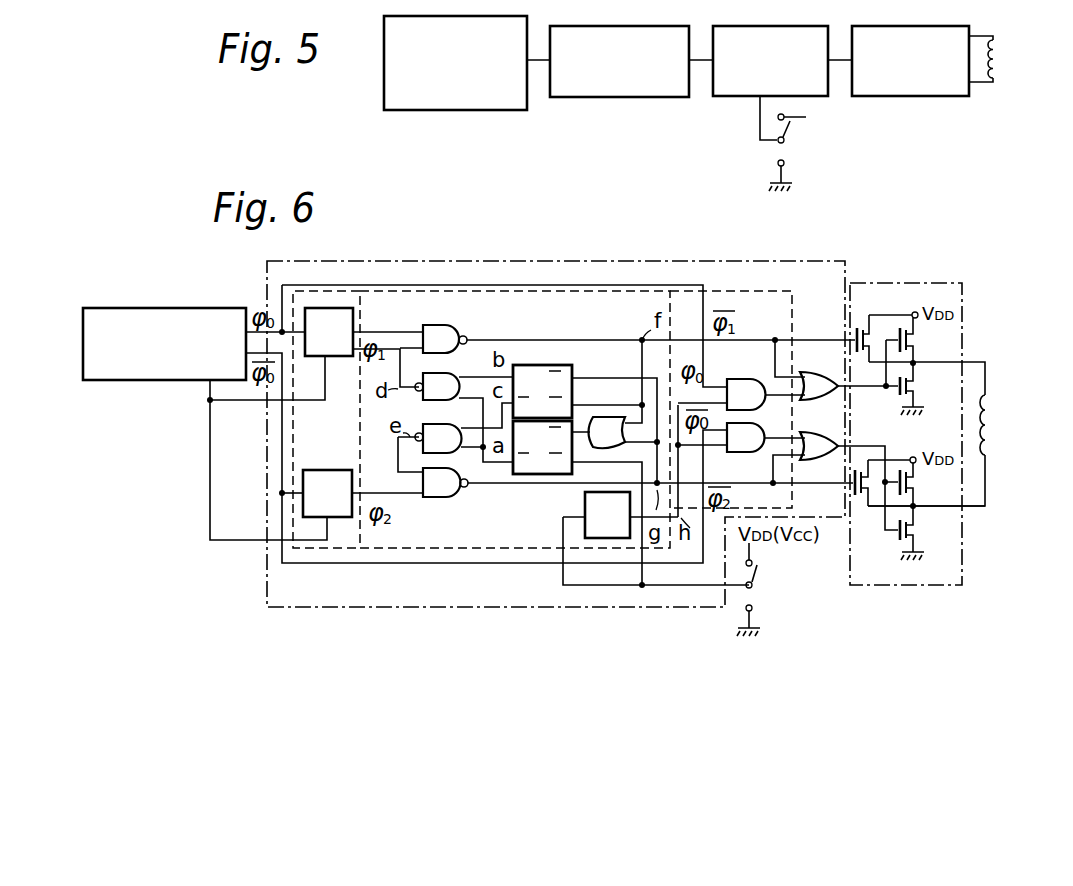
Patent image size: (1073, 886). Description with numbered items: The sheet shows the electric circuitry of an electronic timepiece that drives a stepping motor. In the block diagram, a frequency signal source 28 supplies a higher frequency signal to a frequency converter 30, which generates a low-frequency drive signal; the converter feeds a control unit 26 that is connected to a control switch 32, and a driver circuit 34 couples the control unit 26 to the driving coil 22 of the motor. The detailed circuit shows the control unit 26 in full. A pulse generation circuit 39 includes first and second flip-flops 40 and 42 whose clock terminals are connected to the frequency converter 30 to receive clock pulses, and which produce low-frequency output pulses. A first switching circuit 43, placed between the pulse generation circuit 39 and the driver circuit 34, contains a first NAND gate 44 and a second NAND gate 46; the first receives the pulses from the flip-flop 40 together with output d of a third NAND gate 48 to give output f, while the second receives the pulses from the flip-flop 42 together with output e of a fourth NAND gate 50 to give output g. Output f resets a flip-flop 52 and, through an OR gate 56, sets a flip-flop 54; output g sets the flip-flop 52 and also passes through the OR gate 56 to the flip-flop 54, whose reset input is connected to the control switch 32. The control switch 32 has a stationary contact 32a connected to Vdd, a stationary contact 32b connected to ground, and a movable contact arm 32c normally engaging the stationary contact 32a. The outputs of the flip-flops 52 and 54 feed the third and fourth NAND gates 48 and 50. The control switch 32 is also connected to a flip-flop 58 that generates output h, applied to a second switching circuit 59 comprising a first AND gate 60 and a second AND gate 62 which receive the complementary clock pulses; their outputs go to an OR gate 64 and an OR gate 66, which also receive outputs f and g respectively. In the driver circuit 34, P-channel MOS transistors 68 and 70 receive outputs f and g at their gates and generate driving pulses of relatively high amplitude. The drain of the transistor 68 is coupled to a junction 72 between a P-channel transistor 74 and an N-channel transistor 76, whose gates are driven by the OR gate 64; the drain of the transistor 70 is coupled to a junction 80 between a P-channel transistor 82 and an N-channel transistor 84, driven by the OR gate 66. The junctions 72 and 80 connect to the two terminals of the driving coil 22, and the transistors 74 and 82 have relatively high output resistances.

In FIG. 5, the driving coil 22 is at (1000, 63).
In FIG. 6, the driving coil 22 is at (997, 412).
In FIG. 5, the control unit 26 is at (732, 96).
In FIG. 6, the control unit 26 is at (600, 252).
In FIG. 5, the frequency signal source 28 is at (464, 110).
In FIG. 5, the frequency converter 30 is at (621, 97).
In FIG. 6, the frequency converter 30 is at (155, 382).
In FIG. 5, the control switch 32 is at (811, 137).
In FIG. 6, the control switch 32 is at (784, 600).
In FIG. 6, the stationary contact 32a is at (753, 561).
In FIG. 6, the stationary contact 32b is at (755, 612).
In FIG. 6, the movable contact arm 32c is at (762, 574).
In FIG. 5, the driver circuit 34 is at (917, 96).
In FIG. 6, the driver circuit 34 is at (912, 283).
In FIG. 6, the pulse generation circuit 39 is at (296, 291).
In FIG. 6, the first flip-flop 40 is at (333, 318).
In FIG. 6, the second flip-flop 42 is at (337, 517).
In FIG. 6, the first switching circuit 43 is at (440, 291).
In FIG. 6, the first NAND gate 44 is at (432, 330).
In FIG. 6, the second NAND gate 46 is at (428, 496).
In FIG. 6, the third NAND gate 48 is at (452, 378).
In FIG. 6, the fourth NAND gate 50 is at (448, 448).
In FIG. 6, the flip-flop 52 is at (540, 365).
In FIG. 6, the flip-flop 54 is at (540, 475).
In FIG. 6, the OR gate 56 is at (604, 426).
In FIG. 6, the flip-flop 58 is at (597, 535).
In FIG. 6, the second switching circuit 59 is at (722, 288).
In FIG. 6, the first AND gate 60 is at (737, 385).
In FIG. 6, the second AND gate 62 is at (752, 464).
In FIG. 6, the OR gate 64 is at (808, 378).
In FIG. 6, the OR gate 66 is at (810, 456).
In FIG. 6, the P-channel MOS transistor 68 is at (862, 328).
In FIG. 6, the P-channel MOS transistor 70 is at (860, 496).
In FIG. 6, the junction 72 is at (916, 364).
In FIG. 6, the P-channel transistor 74 is at (930, 328).
In FIG. 6, the N-channel transistor 76 is at (979, 373).
In FIG. 6, the junction 80 is at (916, 507).
In FIG. 6, the P-channel transistor 82 is at (930, 479).
In FIG. 6, the N-channel transistor 84 is at (930, 536).